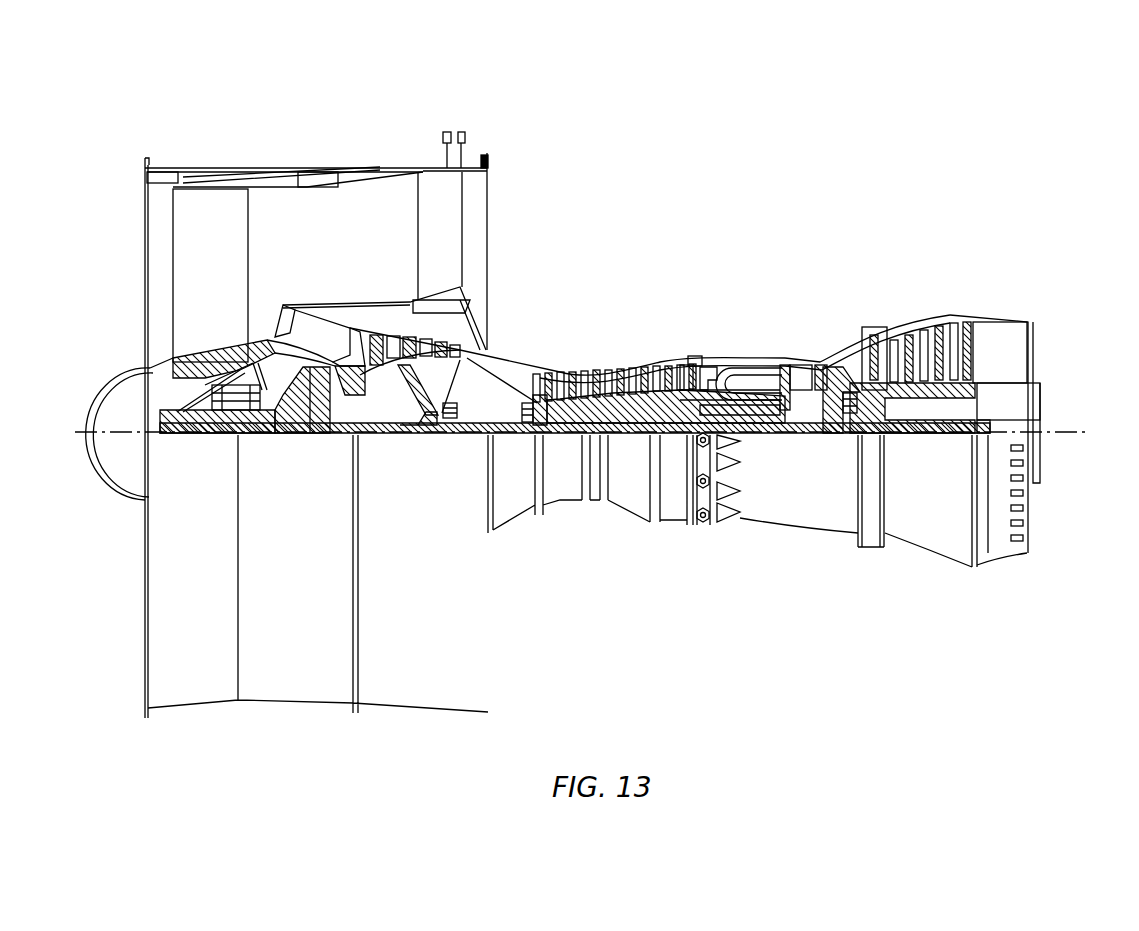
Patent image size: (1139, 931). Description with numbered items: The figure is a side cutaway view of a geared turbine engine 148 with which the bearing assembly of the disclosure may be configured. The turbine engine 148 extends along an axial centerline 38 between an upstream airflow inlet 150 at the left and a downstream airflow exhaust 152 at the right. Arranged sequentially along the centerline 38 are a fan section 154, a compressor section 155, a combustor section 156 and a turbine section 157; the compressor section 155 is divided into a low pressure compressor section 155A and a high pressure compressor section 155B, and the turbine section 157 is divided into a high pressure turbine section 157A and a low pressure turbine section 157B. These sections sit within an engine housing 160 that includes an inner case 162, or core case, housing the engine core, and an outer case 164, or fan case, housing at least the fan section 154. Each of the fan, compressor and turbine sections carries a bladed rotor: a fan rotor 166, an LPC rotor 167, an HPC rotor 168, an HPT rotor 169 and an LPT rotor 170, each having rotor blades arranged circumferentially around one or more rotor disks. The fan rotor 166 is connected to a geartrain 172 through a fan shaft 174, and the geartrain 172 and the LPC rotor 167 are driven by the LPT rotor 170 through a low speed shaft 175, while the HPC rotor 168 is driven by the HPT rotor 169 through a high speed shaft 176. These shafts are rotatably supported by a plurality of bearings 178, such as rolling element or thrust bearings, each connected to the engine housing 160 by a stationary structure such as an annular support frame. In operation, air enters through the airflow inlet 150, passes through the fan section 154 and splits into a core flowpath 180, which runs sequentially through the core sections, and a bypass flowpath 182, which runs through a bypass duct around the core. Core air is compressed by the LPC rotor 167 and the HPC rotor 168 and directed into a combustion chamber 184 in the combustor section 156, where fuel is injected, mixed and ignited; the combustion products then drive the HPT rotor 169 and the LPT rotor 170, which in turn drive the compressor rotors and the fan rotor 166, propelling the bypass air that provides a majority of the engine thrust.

The axial centerline 38 is at (1072, 435).
The geared turbine engine 148 is at (119, 151).
The airflow inlet 150 is at (145, 230).
The airflow exhaust 152 is at (1033, 348).
The fan section 154 is at (300, 149).
The compressor section 155 is at (668, 98).
The low pressure compressor section 155A is at (487, 139).
The high pressure compressor section 155B is at (668, 303).
The combustor section 156 is at (772, 305).
The turbine section 157 is at (995, 228).
The high pressure turbine section 157A is at (845, 305).
The low pressure turbine section 157B is at (995, 299).
The engine housing 160 is at (508, 539).
The inner case 162 is at (670, 518).
The outer case 164 is at (437, 714).
The fan rotor 166 is at (173, 362).
The LPC rotor 167 is at (410, 387).
The HPC rotor 168 is at (637, 412).
The HPT rotor 169 is at (798, 414).
The LPT rotor 170 is at (925, 388).
The geartrain 172 is at (320, 427).
The fan shaft 174 is at (197, 427).
The low speed shaft 175 is at (945, 434).
The high speed shaft 176 is at (747, 416).
The bearings 178 is at (252, 412).
The core flowpath 180 is at (509, 360).
The bypass flowpath 182 is at (355, 256).
The combustion chamber 184 is at (737, 382).